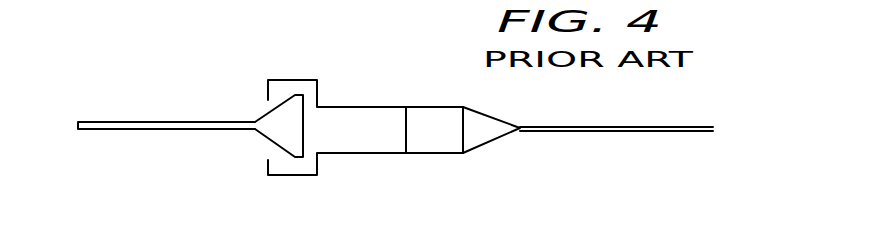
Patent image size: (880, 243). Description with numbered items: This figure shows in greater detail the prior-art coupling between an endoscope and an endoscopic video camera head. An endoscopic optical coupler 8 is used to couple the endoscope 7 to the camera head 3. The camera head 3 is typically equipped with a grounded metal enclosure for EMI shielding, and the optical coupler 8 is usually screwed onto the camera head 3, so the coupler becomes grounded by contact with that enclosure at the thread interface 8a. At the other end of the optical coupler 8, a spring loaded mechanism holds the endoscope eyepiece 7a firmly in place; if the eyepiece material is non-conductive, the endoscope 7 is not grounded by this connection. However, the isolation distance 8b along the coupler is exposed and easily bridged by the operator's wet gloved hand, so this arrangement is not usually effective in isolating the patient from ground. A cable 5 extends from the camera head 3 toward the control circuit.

The endoscope 7 is at (165, 122).
The endoscope eyepiece 7a is at (270, 120).
The endoscopic optical coupler 8 is at (317, 82).
The thread interface 8a is at (407, 107).
The isolation distance 8b is at (262, 163).
The camera head 3 is at (414, 150).
The optical fiber 5 is at (580, 132).